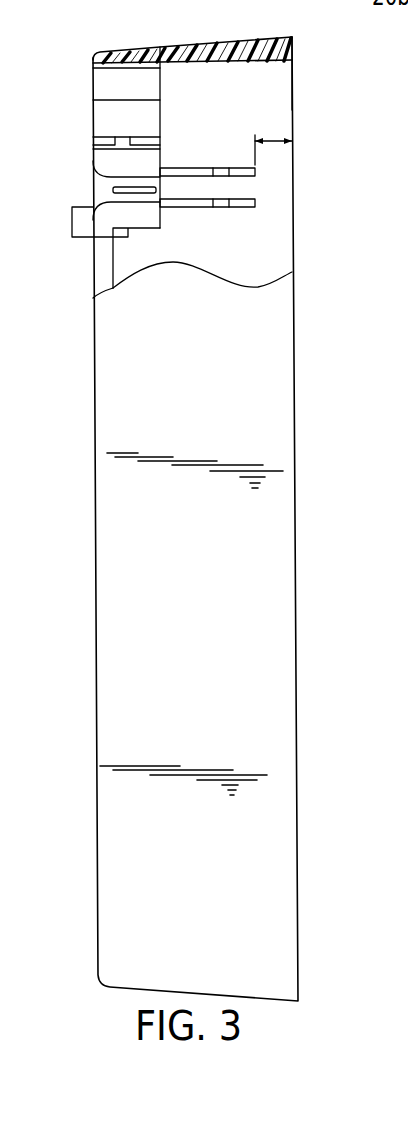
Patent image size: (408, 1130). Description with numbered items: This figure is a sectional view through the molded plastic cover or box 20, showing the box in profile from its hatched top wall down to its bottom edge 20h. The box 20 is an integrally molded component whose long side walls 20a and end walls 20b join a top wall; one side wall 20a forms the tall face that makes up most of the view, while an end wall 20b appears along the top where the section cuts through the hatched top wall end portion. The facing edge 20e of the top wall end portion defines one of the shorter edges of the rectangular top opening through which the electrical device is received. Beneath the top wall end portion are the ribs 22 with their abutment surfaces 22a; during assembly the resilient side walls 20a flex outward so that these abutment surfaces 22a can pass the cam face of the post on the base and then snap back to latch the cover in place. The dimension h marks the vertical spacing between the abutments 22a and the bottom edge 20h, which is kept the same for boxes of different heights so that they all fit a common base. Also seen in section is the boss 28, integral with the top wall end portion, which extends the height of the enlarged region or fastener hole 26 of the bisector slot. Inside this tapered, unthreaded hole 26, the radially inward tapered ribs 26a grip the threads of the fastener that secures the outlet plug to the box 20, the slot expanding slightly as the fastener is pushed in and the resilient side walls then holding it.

The molded plastic cover or box 20 is at (85, 398).
The side walls 20a is at (219, 366).
The end walls 20b is at (218, 43).
The opposed edges of the top opening 20e is at (105, 238).
The bottom edge of the cover 20h is at (294, 90).
The ribs 22 is at (265, 189).
The abutment surfaces 22a is at (212, 199).
The enlarged region or fastener hole 26 is at (101, 182).
The tapered ribs 26a is at (135, 193).
The boss 28 is at (160, 155).
The vertical spacing dimension h is at (277, 138).